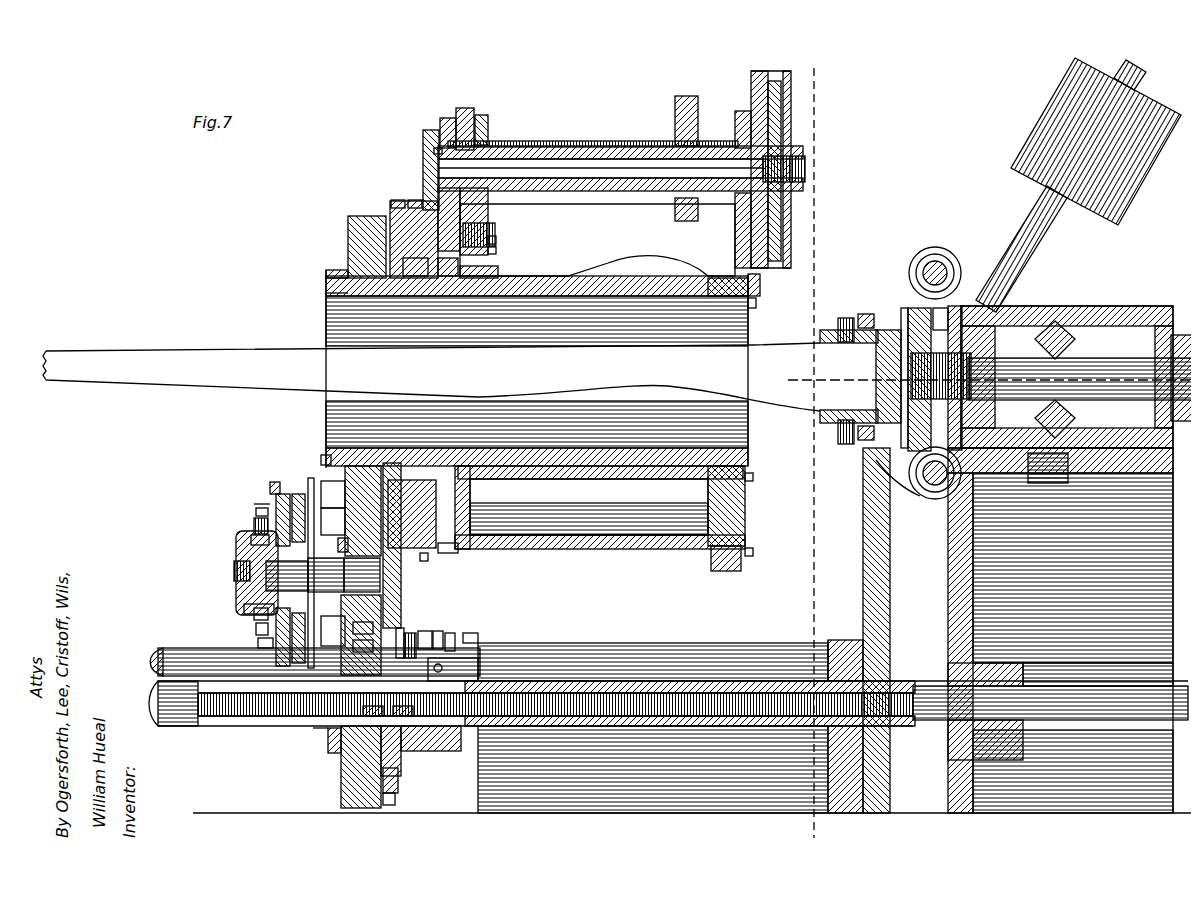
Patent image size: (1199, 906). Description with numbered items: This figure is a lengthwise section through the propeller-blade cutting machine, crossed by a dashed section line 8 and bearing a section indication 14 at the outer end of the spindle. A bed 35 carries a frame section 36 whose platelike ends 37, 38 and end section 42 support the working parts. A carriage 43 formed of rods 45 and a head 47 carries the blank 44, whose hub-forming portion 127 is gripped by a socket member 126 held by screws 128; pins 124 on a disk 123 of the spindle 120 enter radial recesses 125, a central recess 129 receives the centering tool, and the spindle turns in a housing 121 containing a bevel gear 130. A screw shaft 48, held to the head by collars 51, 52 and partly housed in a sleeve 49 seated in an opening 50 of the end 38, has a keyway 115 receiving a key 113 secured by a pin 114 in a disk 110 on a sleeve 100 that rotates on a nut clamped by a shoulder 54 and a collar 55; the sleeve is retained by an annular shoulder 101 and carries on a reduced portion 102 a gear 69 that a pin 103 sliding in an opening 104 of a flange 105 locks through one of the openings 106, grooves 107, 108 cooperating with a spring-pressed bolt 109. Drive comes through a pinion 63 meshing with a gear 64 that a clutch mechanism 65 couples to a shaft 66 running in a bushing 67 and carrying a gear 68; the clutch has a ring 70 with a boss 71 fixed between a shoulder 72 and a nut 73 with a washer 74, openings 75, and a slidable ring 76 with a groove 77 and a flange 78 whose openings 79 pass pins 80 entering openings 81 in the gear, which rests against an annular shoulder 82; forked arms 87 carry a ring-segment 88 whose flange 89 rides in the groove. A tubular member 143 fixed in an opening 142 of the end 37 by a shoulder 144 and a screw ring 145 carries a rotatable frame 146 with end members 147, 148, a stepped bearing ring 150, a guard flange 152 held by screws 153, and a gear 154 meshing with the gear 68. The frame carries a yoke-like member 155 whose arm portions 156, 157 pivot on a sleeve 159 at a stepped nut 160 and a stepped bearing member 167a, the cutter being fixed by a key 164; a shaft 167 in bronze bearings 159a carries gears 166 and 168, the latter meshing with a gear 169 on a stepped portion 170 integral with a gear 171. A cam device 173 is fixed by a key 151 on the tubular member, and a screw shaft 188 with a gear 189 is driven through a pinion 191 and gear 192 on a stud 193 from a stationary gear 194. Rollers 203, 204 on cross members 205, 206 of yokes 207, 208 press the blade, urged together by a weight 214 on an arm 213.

The section line 8 is at (790, 68).
The flange 14 is at (1181, 378).
The bed 35 is at (260, 805).
The frame section 36 is at (643, 638).
The platelike end 37 is at (346, 217).
The platelike end portion 38 is at (820, 642).
The end section 42 is at (882, 540).
The carriage 43 is at (160, 645).
The blank 44 is at (228, 368).
The rods 45 is at (215, 714).
The carriage head 47 is at (1060, 630).
The screw shaft 48 is at (760, 676).
The sleeve 49 is at (712, 684).
The opening 50 is at (836, 634).
The collar 51 is at (960, 745).
The collar 52 is at (1000, 738).
The shoulder 54 is at (361, 767).
The collar 55 is at (310, 725).
The pinion 63 is at (328, 746).
The gear 64 is at (316, 463).
The clutch mechanism 65 is at (246, 519).
The shaft 66 is at (326, 575).
The bushing 67 is at (362, 575).
The gear 68 is at (393, 556).
The gear 69 is at (388, 788).
The ring 70 is at (333, 545).
The central boss 71 is at (228, 548).
The shoulder 72 is at (287, 576).
The nut 73 is at (225, 574).
The washer 74 is at (236, 598).
The openings 75 is at (300, 572).
The ring 76 is at (246, 516).
The peripheral groove 77 is at (250, 635).
The flange 78 is at (278, 481).
The openings 79 is at (270, 498).
The pins 80 is at (284, 582).
The openings 81 is at (333, 563).
The annular shoulder 82 is at (333, 520).
The arms 87 is at (248, 500).
The ring-segment 88 is at (246, 610).
The flange 89 is at (243, 532).
The sleeve 100 is at (445, 625).
The annular shoulder 101 is at (440, 679).
The reduced-diameter portion 102 is at (403, 701).
The pin 103 is at (431, 623).
The opening 104 is at (420, 623).
The flange 105 is at (392, 620).
The openings 106 is at (392, 768).
The groove 107 is at (369, 628).
The groove 108 is at (422, 627).
The spring-pressed bolt 109 is at (369, 646).
The disk 110 is at (442, 732).
The key-forming member 113 is at (445, 665).
The pin 114 is at (470, 625).
The keyway 115 is at (373, 701).
The spindle 120 is at (1051, 376).
The housing 121 is at (1075, 300).
The disk 123 is at (935, 302).
The pins 124 is at (893, 306).
The radial recesses 125 is at (858, 306).
The socket member 126 is at (864, 385).
The hub-forming portion 127 is at (823, 335).
The screws 128 is at (838, 310).
The central recess 129 is at (870, 366).
The bevel gear 130 is at (1065, 340).
The opening 142 is at (318, 285).
The tubular member 143 is at (668, 446).
The shoulder 144 is at (330, 262).
The screw ring 145 is at (318, 270).
The frame 146 is at (726, 232).
The end member 147 is at (755, 270).
The end member 148 is at (447, 266).
The stepped bearing ring 150 is at (740, 276).
The key 151 is at (600, 466).
The guard flange 152 is at (602, 540).
The screws 153 is at (745, 480).
The gear 154 is at (388, 212).
The yoke-like member 155 is at (438, 110).
The arm portion 156 is at (768, 63).
The arm portion 157 is at (458, 100).
The sleeve 159 is at (523, 139).
The bronze bearings 159a is at (480, 195).
The stepped nut 160 is at (728, 134).
The key 164 is at (380, 194).
The gear 166 is at (775, 97).
The shaft 167 is at (628, 151).
The stepped bearing member 167a is at (426, 143).
The gear 168 is at (422, 122).
The gear 169 is at (430, 191).
The annular stepped portion 170 is at (412, 266).
The gear 171 is at (400, 192).
The cam device 173 is at (597, 369).
The screw shaft 188 is at (585, 138).
The gear 189 is at (474, 107).
The pinion 191 is at (488, 233).
The gear 192 is at (488, 244).
The stud 193 is at (487, 226).
The stationary gear 194 is at (490, 261).
The upper roller 203 is at (944, 250).
The lower roller 204 is at (870, 457).
The cross member 205 is at (926, 256).
The cross member 206 is at (918, 469).
The yoke 207 is at (942, 298).
The yoke 208 is at (920, 486).
The arm 213 is at (1040, 218).
The weight 214 is at (1096, 141).